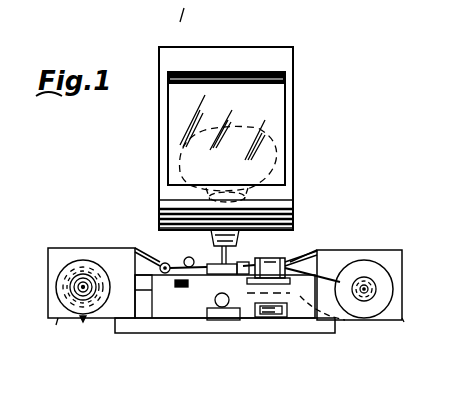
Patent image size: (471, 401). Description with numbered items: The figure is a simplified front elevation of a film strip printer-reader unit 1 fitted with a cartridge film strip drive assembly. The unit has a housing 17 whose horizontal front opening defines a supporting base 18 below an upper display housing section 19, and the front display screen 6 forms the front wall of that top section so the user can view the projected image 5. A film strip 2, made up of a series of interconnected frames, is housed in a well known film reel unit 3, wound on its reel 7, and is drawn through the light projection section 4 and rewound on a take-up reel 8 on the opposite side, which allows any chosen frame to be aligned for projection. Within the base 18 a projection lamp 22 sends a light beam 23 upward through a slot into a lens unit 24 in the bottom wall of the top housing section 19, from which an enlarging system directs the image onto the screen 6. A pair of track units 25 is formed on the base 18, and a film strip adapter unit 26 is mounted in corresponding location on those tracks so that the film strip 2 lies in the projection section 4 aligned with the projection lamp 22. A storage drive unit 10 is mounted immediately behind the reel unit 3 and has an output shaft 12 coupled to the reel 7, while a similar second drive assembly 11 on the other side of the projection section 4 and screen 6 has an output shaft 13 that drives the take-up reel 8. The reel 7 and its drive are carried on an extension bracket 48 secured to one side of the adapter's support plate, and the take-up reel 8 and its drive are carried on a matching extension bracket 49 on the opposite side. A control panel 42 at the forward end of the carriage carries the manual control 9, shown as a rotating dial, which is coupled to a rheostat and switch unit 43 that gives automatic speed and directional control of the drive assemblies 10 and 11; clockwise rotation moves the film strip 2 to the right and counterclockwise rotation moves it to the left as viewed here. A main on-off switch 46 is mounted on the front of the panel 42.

The printer-reader unit 1 is at (190, 47).
The film strip 2 is at (189, 257).
The film reel unit 3 is at (83, 320).
The light projection section 4 is at (248, 319).
The projected image 5 is at (276, 152).
The front display screen 6 is at (275, 125).
The reel 7 is at (60, 293).
The take-up reel 8 is at (372, 276).
The manual control 9 is at (290, 257).
The storage drive unit 10 is at (78, 247).
The second drive assembly 11 is at (392, 232).
The output shaft 12 is at (75, 281).
The output shaft 13 is at (372, 289).
The housing 17 is at (122, 333).
The supporting base 18 is at (178, 289).
The upper display housing section 19 is at (159, 123).
The projection lamp 22 is at (218, 321).
The light beam 23 is at (220, 276).
The lens unit 24 is at (240, 240).
The track units 25 is at (163, 263).
The film strip adapter unit 26 is at (140, 284).
The control panel 42 is at (325, 318).
The rheostat and switch unit 43 is at (348, 322).
The main on-off switch 46 is at (283, 318).
The extension bracket 48 is at (57, 319).
The extension bracket 49 is at (404, 320).